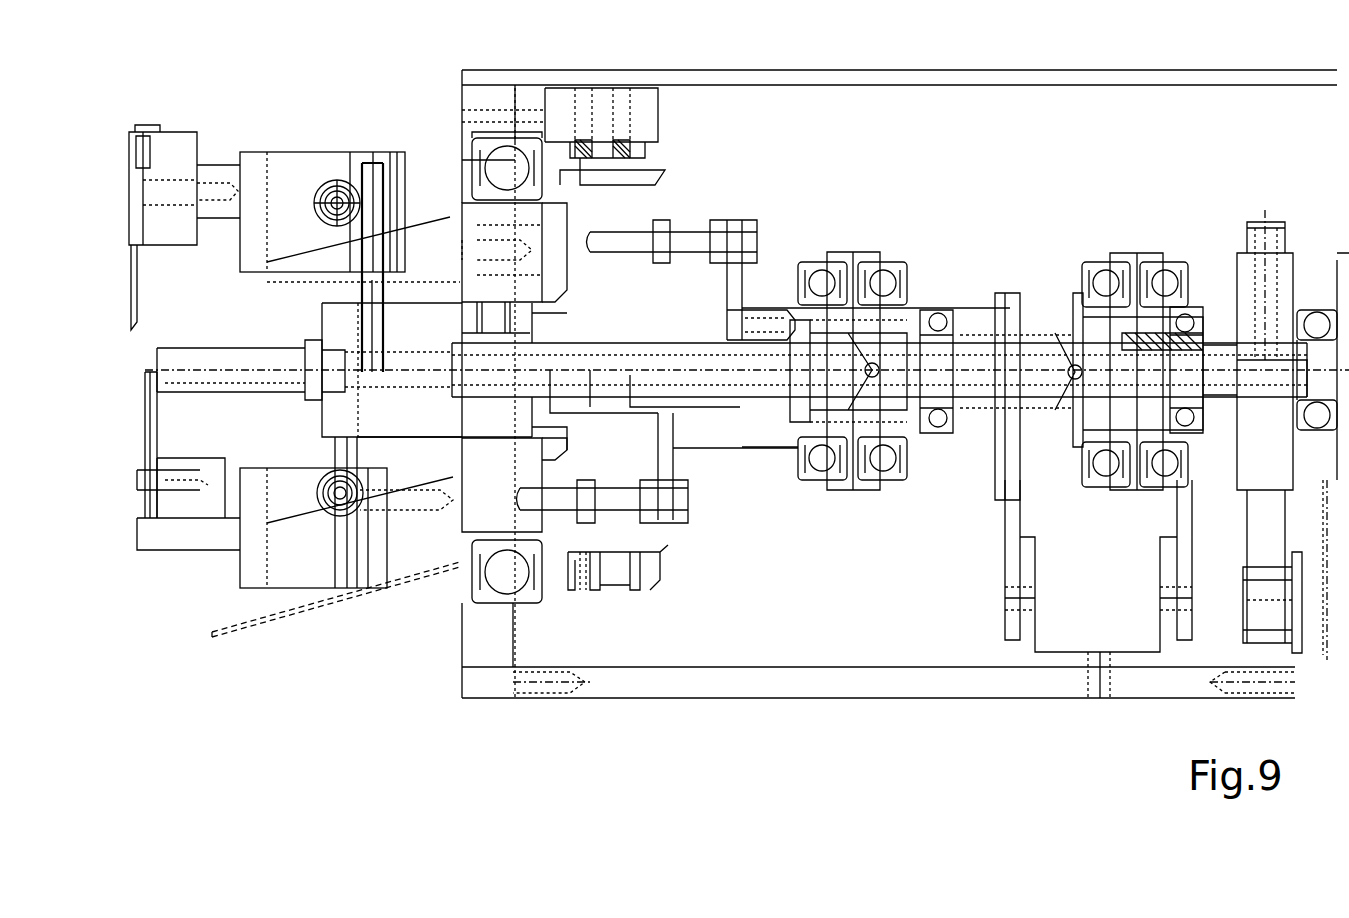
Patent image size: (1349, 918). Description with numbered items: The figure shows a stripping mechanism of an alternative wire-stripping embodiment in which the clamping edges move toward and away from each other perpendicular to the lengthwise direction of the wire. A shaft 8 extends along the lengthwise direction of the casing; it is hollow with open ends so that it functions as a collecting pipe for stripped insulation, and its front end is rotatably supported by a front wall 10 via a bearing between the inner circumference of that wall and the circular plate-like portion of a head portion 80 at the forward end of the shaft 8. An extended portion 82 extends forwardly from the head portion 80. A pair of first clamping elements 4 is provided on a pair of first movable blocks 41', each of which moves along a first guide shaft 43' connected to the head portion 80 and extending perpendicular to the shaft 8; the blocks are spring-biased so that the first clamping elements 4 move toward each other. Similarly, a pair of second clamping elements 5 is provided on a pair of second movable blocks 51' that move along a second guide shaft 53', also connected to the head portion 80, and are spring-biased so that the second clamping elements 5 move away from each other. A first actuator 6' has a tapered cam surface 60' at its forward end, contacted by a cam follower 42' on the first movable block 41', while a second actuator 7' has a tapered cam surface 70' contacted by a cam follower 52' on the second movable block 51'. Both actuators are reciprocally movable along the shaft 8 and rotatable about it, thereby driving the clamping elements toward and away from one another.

The first clamping elements 4 is at (128, 300).
The second clamping elements 5 is at (135, 390).
The first actuator 6' is at (799, 237).
The second actuator 7' is at (658, 492).
The shaft 8 is at (768, 410).
The front wall 10 is at (475, 640).
The first movable blocks 41' is at (328, 156).
The cam follower 42' is at (344, 130).
The first guide shaft 43' is at (383, 222).
The second movable blocks 51' is at (299, 531).
The cam follower 52' is at (310, 461).
The second guide shaft 53' is at (336, 609).
The tapered cam surface 60' is at (214, 173).
The tapered cam surface 70' is at (213, 456).
The head portion 80 is at (335, 325).
The extended portion 82 is at (190, 358).